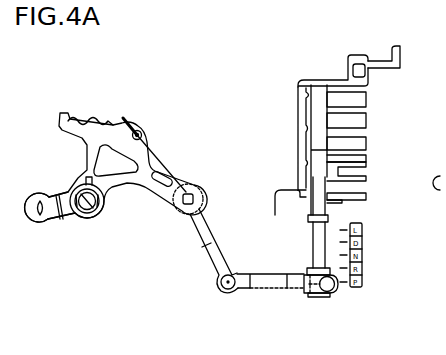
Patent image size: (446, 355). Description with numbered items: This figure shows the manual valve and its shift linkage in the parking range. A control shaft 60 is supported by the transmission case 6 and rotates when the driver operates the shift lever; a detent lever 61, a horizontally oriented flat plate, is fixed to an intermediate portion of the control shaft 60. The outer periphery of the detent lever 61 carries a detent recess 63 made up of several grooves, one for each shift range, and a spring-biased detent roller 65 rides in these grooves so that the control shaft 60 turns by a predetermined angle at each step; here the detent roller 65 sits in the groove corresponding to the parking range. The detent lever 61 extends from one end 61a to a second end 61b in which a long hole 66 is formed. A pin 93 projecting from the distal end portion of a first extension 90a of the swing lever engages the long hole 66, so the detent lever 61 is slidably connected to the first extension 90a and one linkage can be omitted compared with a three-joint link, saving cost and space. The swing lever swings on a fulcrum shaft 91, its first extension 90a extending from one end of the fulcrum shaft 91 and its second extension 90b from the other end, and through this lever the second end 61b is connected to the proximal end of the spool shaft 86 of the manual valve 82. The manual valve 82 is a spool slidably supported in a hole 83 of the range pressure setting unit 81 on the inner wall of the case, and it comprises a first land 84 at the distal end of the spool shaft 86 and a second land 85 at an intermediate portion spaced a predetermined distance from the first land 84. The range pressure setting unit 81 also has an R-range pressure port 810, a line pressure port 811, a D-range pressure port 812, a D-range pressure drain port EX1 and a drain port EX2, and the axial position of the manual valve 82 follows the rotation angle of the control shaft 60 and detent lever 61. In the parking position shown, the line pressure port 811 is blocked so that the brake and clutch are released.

The transmission case 6 is at (340, 80).
The control shaft 60 is at (85, 217).
The detent lever 61 is at (153, 158).
The detent plate arm 61a is at (50, 222).
The second end 61b is at (202, 201).
The detent recess 63 is at (113, 125).
The detent roller 65 is at (144, 124).
The long hole 66 is at (170, 178).
The range pressure setting unit 81 is at (377, 134).
The R-range pressure port 810 is at (365, 195).
The line pressure port 811 is at (365, 152).
The D-range pressure port 812 is at (365, 130).
The manual valve 82 is at (312, 186).
The hole 83 is at (303, 82).
The first land 84 is at (317, 150).
The second land 85 is at (308, 218).
The spool shaft 86 is at (317, 246).
The first extension 90a is at (202, 247).
The second extension 90b is at (283, 285).
The fulcrum shaft 91 is at (230, 289).
The pin 93 is at (188, 189).
The D-range pressure drain port EX1 is at (365, 107).
The drain port EX2 is at (366, 58).